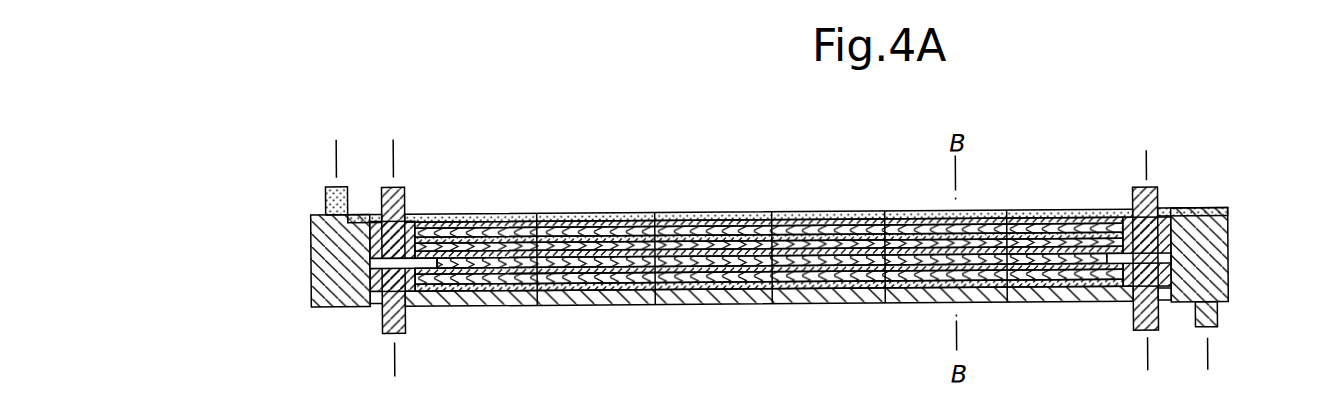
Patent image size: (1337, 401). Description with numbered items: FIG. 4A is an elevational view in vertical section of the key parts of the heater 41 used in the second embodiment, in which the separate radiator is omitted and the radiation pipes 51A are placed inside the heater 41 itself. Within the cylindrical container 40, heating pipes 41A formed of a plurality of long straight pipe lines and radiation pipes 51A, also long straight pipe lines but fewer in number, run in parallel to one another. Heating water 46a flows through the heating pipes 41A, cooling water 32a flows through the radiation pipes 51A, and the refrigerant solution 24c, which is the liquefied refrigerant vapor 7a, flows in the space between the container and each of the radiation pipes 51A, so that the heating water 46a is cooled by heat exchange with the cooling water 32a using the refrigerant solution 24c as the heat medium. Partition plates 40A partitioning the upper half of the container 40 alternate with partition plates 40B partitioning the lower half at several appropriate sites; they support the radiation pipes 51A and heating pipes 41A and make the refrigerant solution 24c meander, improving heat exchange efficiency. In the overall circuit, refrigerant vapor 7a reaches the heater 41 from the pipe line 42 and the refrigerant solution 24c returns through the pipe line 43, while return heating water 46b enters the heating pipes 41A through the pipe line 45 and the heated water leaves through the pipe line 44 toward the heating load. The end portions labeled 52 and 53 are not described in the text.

The refrigerant vapor 7a is at (325, 198).
The refrigerant solution 24c is at (325, 285).
The cooling water 32a is at (367, 290).
The cylindrical container 40 is at (547, 307).
The partition plates 40A is at (540, 215).
The partition plates 40B is at (662, 307).
The heater 41 is at (732, 119).
The heating pipes 41A is at (727, 260).
The pipe line 42 is at (352, 188).
The pipe line 43 is at (1218, 330).
The pipe line 44 is at (406, 191).
The pipe line 45 is at (1132, 200).
The heating water 46a is at (370, 247).
The return heating water 46b is at (1158, 198).
The radiation pipes 51A is at (1037, 277).
The lower collar 52 is at (405, 318).
The right collar 53 is at (1135, 326).